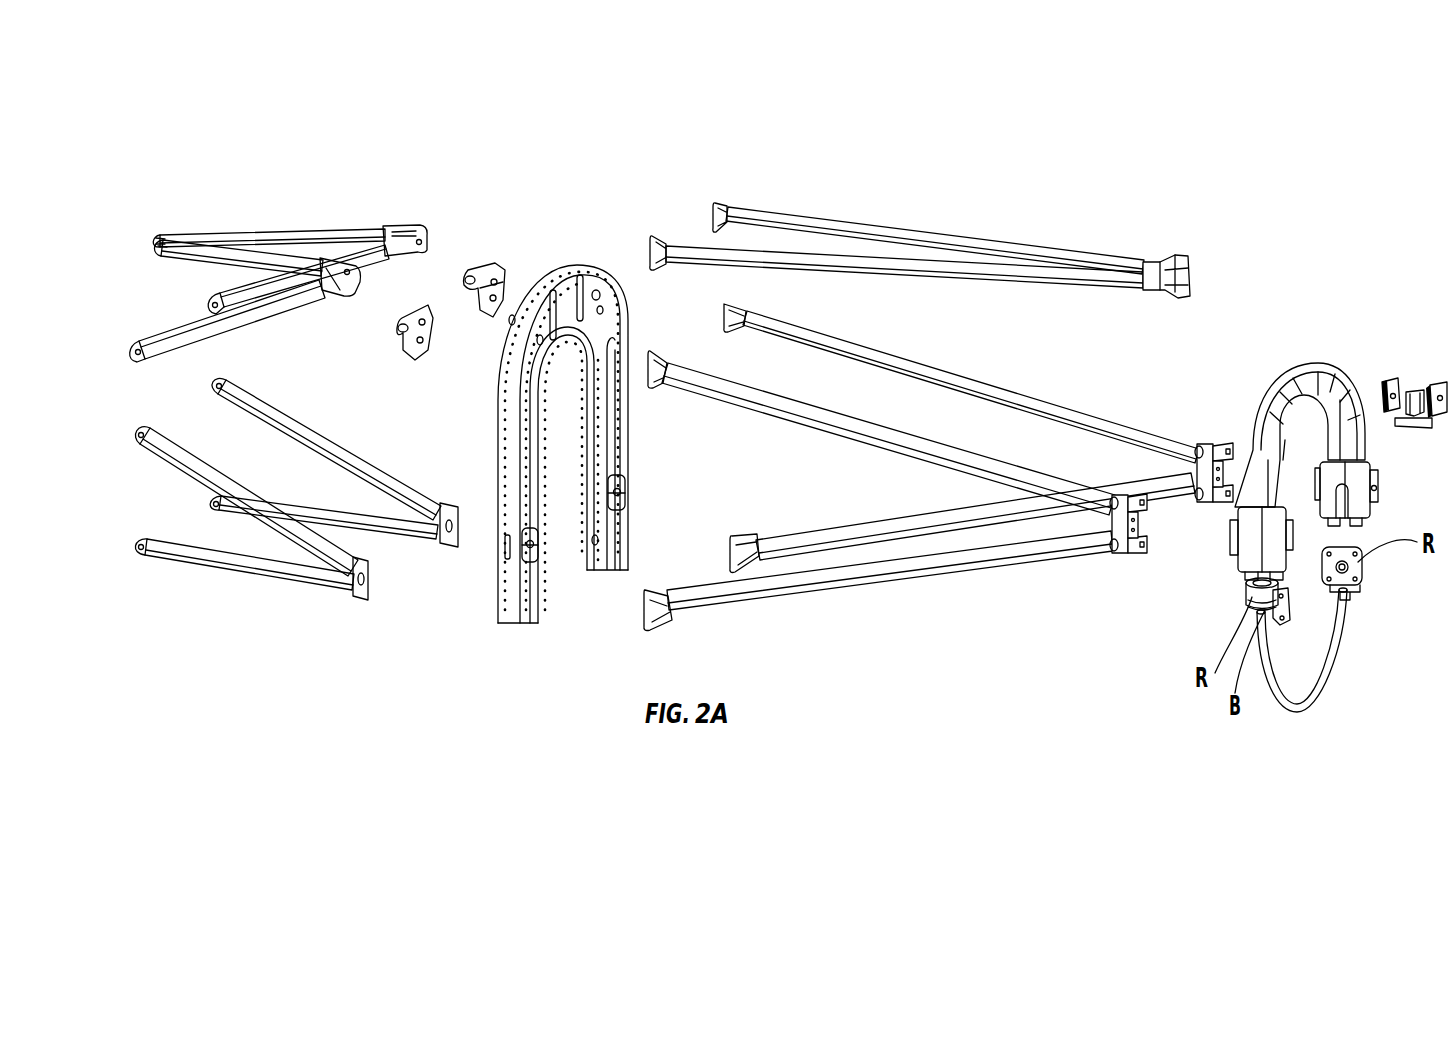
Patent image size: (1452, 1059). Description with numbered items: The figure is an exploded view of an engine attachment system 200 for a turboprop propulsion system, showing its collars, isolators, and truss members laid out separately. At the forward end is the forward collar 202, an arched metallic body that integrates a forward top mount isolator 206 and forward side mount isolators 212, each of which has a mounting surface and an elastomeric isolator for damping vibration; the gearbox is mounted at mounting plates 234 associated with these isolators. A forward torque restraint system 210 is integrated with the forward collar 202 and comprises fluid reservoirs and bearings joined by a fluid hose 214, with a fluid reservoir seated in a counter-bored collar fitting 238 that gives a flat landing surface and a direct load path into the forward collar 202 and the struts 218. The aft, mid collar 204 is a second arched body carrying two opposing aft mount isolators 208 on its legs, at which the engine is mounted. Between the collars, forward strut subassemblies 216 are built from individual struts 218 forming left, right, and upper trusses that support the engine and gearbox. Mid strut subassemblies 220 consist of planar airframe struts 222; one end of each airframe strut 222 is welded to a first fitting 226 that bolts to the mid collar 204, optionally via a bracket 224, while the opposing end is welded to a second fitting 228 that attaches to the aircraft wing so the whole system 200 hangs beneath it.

The engine attachment system 200 is at (196, 192).
The forward collar 202 is at (1307, 368).
The mid collar 204 is at (580, 265).
The forward top mount isolator 206 is at (1411, 372).
The aft mount isolator 208 is at (640, 504).
The forward torque restraint system 210 is at (1330, 704).
The forward side mount isolator 212 is at (1386, 500).
The fluid hose 214 is at (1343, 650).
The forward strut subassembly 216 is at (957, 352).
The strut 218 is at (975, 395).
The mid strut subassembly 220 is at (312, 316).
The airframe strut 222 is at (300, 237).
The bracket 224 is at (498, 258).
The first fitting 226 is at (333, 587).
The second fitting 228 is at (137, 549).
The mounting plate 234 is at (1413, 430).
The collar fitting 238 is at (1252, 538).